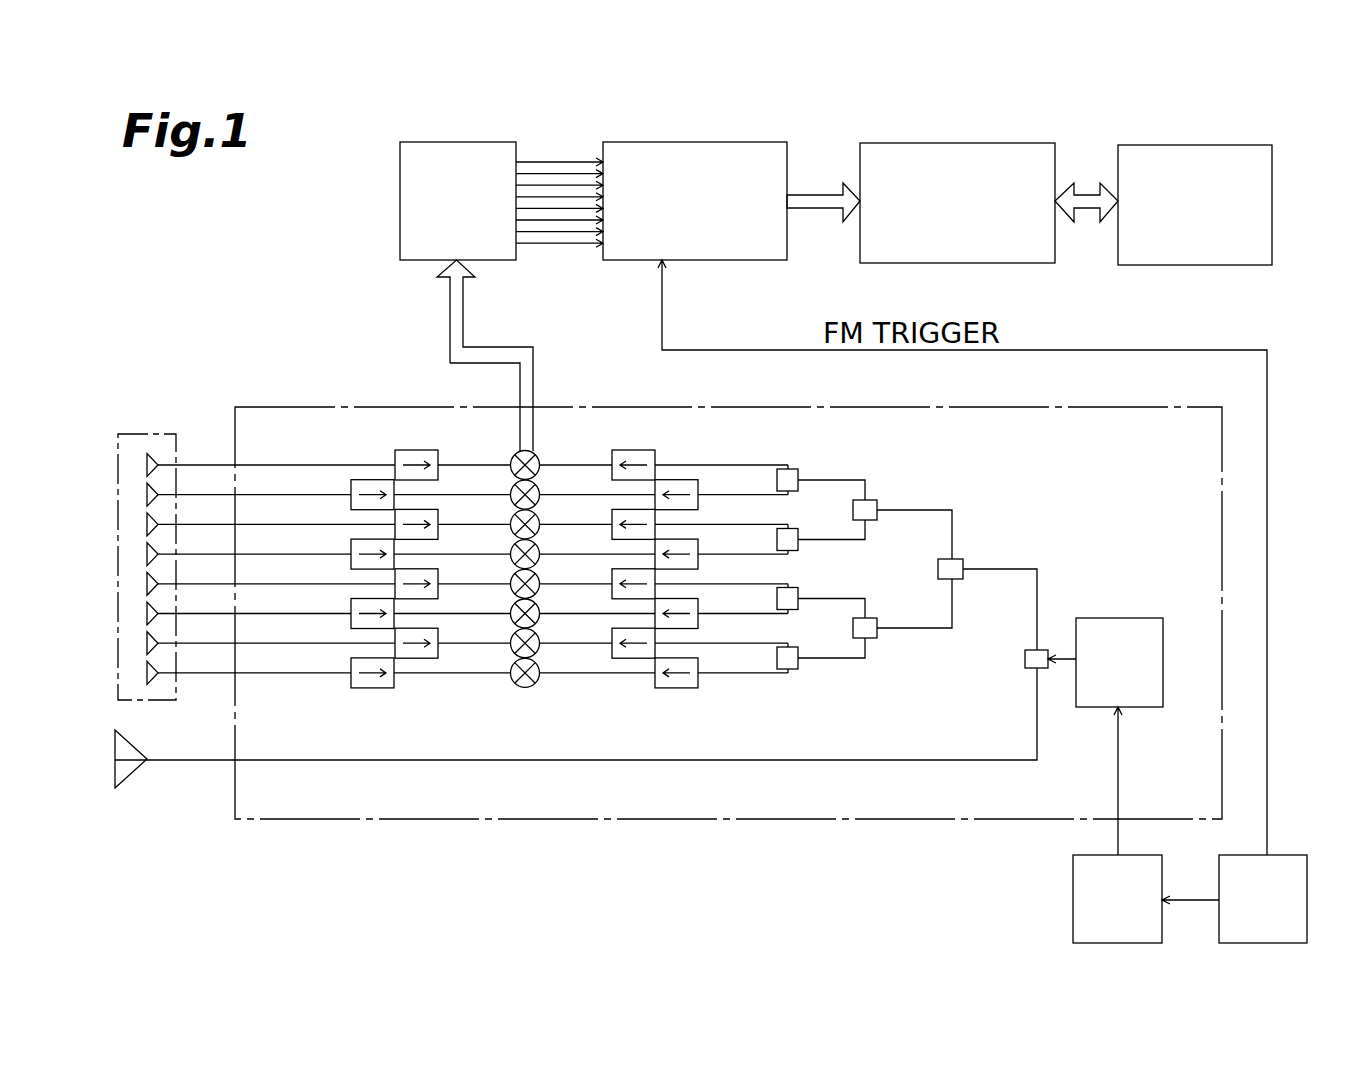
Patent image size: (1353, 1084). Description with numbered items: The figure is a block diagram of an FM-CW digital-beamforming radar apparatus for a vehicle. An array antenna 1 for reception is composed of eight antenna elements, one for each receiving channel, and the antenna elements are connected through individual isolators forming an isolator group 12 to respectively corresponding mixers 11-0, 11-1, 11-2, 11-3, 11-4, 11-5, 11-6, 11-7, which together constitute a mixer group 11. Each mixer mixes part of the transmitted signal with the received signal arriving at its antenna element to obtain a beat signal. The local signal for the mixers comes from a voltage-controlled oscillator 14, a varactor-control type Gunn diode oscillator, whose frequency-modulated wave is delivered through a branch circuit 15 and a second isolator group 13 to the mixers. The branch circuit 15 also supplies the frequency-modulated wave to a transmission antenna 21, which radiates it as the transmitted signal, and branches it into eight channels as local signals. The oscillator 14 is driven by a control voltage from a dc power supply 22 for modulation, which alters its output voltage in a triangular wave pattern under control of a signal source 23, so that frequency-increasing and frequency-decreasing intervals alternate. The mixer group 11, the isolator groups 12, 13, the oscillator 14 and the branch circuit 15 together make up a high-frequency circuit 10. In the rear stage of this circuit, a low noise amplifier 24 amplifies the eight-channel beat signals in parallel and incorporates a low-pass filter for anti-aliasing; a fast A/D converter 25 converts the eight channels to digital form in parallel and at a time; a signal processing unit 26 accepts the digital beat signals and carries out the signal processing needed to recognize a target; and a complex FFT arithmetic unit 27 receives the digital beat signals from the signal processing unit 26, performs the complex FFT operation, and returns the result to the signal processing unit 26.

The array antenna 1 is at (135, 434).
The high-frequency circuit 10 is at (315, 407).
The mixer group 11 is at (545, 591).
The mixer 11-0 is at (538, 461).
The mixer 11-1 is at (538, 491).
The mixer 11-2 is at (538, 520).
The mixer 11-3 is at (538, 550).
The mixer 11-4 is at (538, 580).
The mixer 11-5 is at (538, 610).
The mixer 11-6 is at (538, 639).
The mixer 11-7 is at (493, 702).
The isolator group 12 is at (447, 702).
The isolator group 13 is at (707, 702).
The voltage-controlled oscillator 14 is at (1135, 618).
The branch circuit 15 is at (1053, 451).
The transmission antenna 21 is at (133, 778).
The dc power supply 22 is at (1073, 865).
The signal source 23 is at (1275, 855).
The low noise amplifier 24 is at (467, 142).
The fast A/D converter 25 is at (745, 142).
The signal processing unit 26 is at (1010, 143).
The complex FFT arithmetic unit 27 is at (1225, 145).